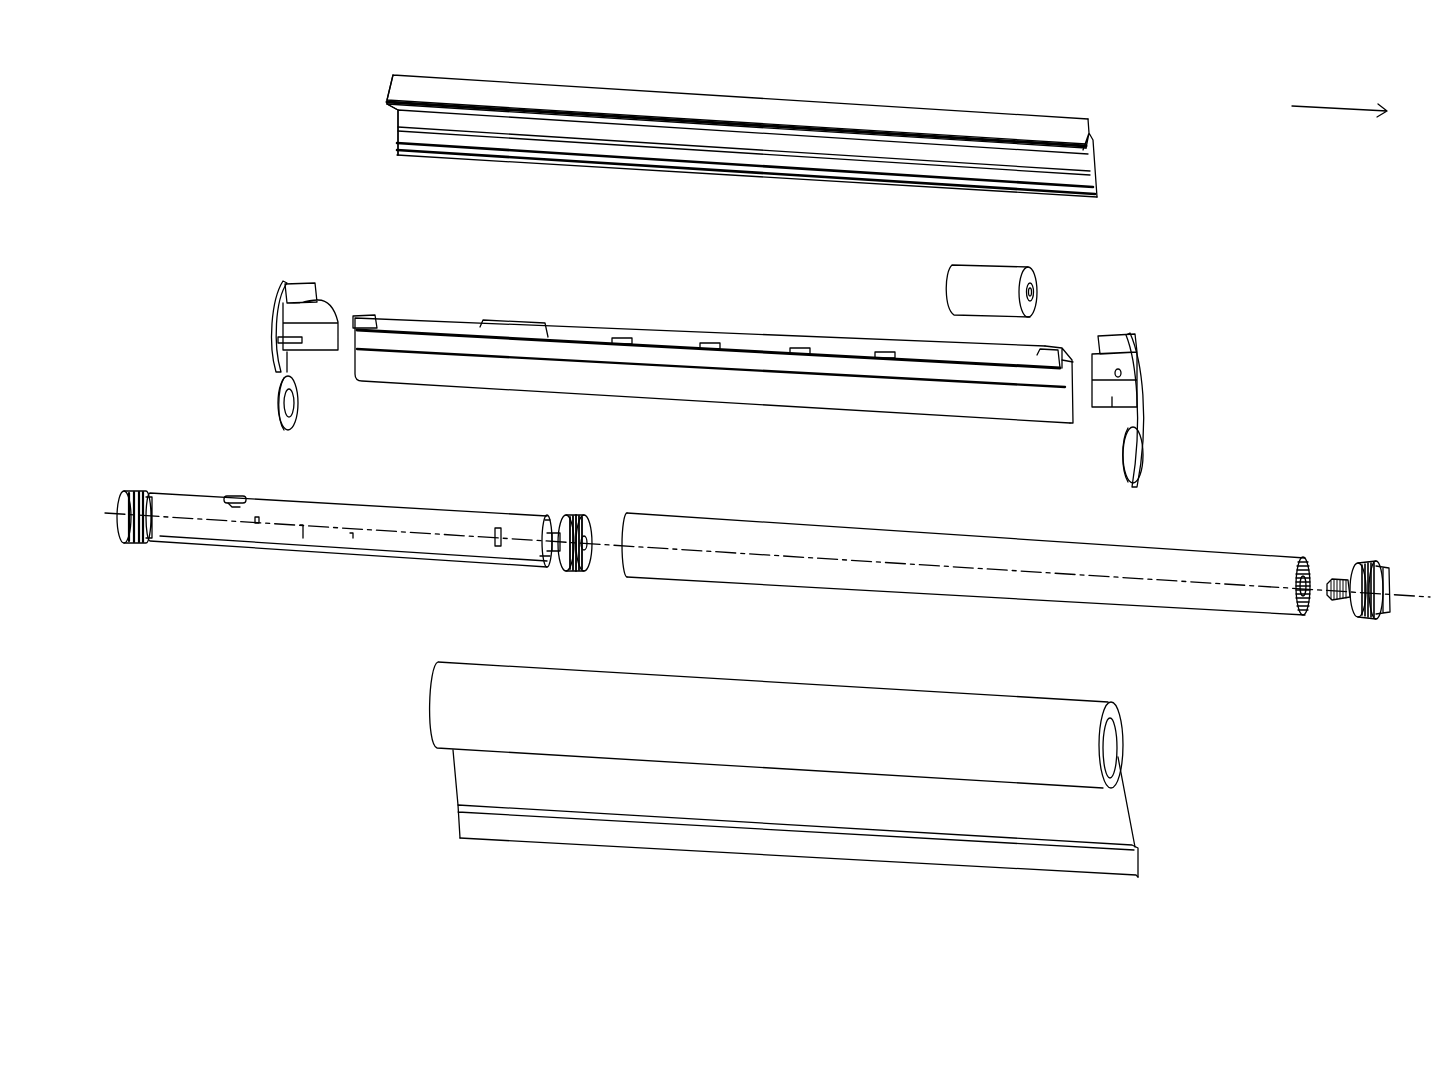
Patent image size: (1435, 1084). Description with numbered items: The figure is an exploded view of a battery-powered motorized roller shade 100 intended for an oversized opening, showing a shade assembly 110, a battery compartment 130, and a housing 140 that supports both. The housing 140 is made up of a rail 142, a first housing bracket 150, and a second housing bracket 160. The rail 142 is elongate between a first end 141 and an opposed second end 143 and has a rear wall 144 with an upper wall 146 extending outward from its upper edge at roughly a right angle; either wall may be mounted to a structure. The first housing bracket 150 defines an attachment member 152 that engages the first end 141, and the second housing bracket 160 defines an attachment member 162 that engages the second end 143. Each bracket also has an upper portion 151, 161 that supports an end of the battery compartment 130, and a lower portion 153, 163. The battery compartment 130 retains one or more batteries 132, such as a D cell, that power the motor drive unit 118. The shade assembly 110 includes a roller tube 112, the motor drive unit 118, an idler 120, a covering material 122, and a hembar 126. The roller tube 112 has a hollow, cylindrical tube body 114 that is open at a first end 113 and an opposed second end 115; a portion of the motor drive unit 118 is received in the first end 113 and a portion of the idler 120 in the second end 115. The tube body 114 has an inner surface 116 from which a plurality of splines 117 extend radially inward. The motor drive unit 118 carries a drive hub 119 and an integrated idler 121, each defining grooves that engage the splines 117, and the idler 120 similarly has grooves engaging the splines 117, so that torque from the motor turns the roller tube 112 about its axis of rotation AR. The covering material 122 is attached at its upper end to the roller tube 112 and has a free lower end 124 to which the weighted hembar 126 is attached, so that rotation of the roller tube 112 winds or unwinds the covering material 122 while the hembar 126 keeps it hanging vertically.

The motorized roller shade 100 is at (173, 110).
The shade assembly 110 is at (299, 711).
The roller tube 112 is at (1257, 553).
The first end 113 is at (622, 560).
The tube body 114 is at (964, 553).
The second end 115 is at (1326, 605).
The inner surface 116 is at (1312, 578).
The splines 117 is at (1310, 557).
The motor drive unit 118 is at (320, 560).
The drive hub 119 is at (572, 513).
The idler 120 is at (1363, 565).
The integrated idler 121 is at (143, 488).
The covering material 122 is at (802, 720).
The lower end 124 is at (497, 803).
The hembar 126 is at (568, 830).
The battery compartment 130 is at (712, 410).
The battery 132 is at (965, 265).
The housing 140 is at (1211, 153).
The first end 141 is at (397, 122).
The rail 142 is at (1025, 115).
The second end 143 is at (1095, 157).
The rear wall 144 is at (755, 147).
The upper wall 146 is at (757, 110).
The first housing bracket 150 is at (277, 285).
The upper portion 151 is at (275, 335).
The attachment member 152 is at (300, 290).
The lower portion 153 is at (275, 403).
The second housing bracket 160 is at (1145, 357).
The upper portion 161 is at (1140, 400).
The attachment member 162 is at (1110, 340).
The lower portion 163 is at (1145, 455).
The axis of rotation AR is at (1383, 610).